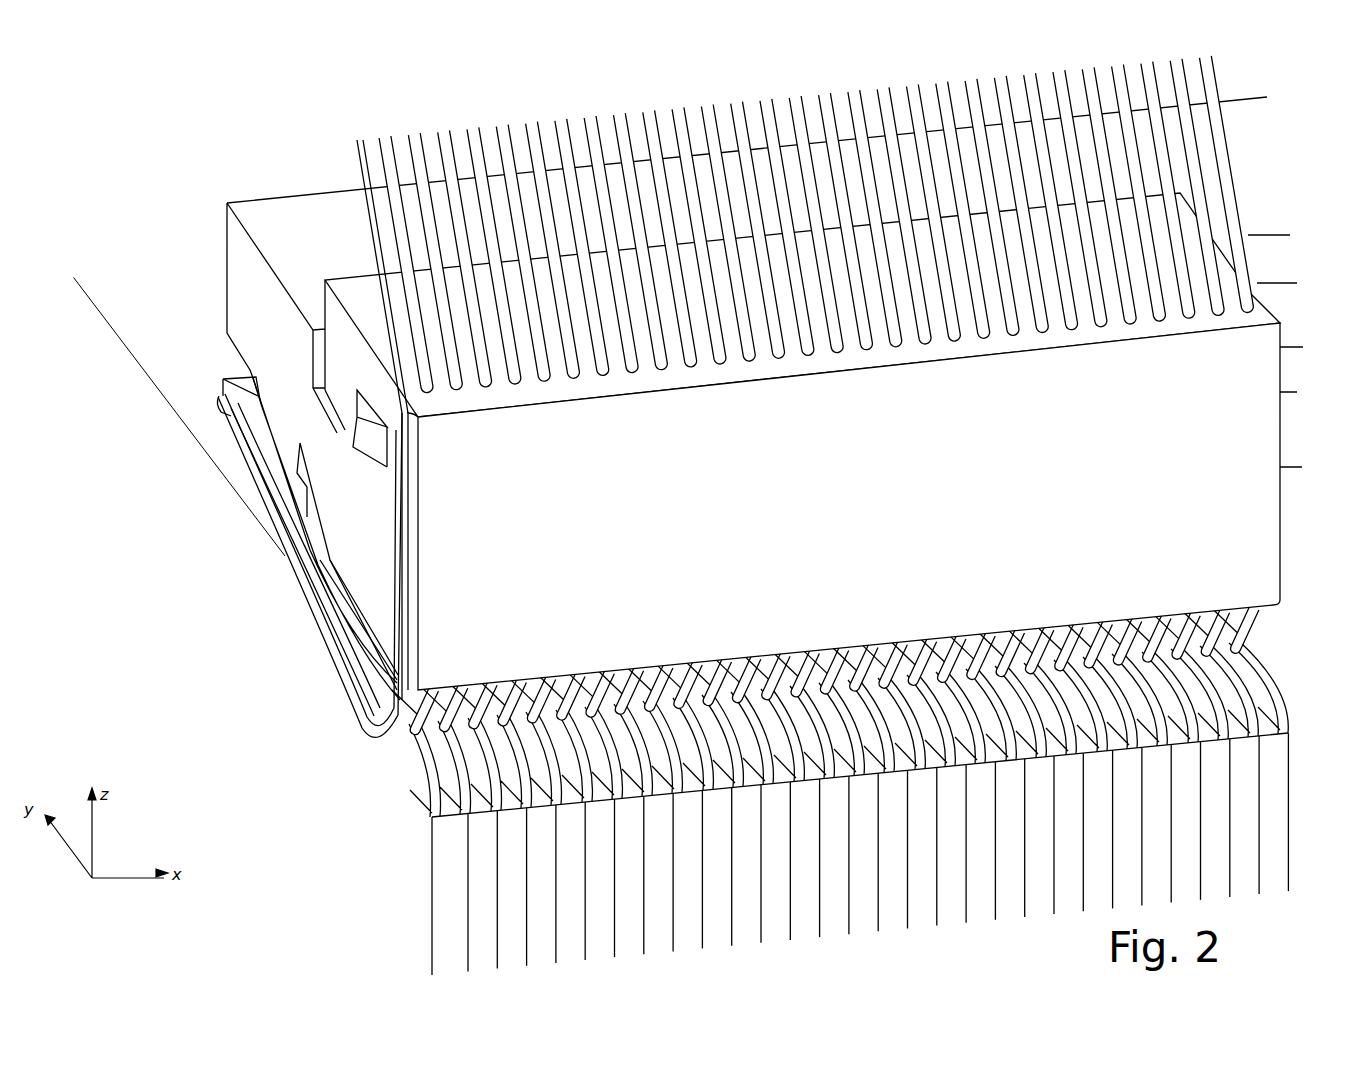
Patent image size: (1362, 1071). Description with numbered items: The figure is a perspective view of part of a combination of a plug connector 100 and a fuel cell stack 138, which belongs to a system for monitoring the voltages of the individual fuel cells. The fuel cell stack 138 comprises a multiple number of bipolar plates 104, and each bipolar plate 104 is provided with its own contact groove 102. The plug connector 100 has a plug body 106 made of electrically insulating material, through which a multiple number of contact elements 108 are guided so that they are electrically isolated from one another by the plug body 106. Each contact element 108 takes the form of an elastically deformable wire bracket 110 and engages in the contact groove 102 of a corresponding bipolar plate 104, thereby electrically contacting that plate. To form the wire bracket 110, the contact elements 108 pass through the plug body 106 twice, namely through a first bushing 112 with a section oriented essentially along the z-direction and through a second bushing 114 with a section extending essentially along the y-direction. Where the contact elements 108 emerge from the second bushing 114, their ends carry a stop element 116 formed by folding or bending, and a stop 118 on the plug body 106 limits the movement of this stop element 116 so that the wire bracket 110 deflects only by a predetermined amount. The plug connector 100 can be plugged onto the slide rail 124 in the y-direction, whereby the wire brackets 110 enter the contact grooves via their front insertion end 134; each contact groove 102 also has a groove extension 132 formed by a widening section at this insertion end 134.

The plug connector 100 is at (784, 398).
The contact groove 102 is at (478, 762).
The bipolar plate 104 is at (1272, 800).
The plug body 106 is at (1262, 510).
The contact element 108 is at (1210, 83).
The wire bracket 110 is at (340, 700).
The first bushing 112 is at (403, 618).
The second bushing 114 is at (262, 470).
The stop element 116 is at (218, 412).
The stop 118 is at (227, 427).
The slide rail 124 is at (240, 283).
The groove extension 132 is at (430, 818).
The insertion end 134 is at (1270, 708).
The fuel cell stack 138 is at (1293, 743).